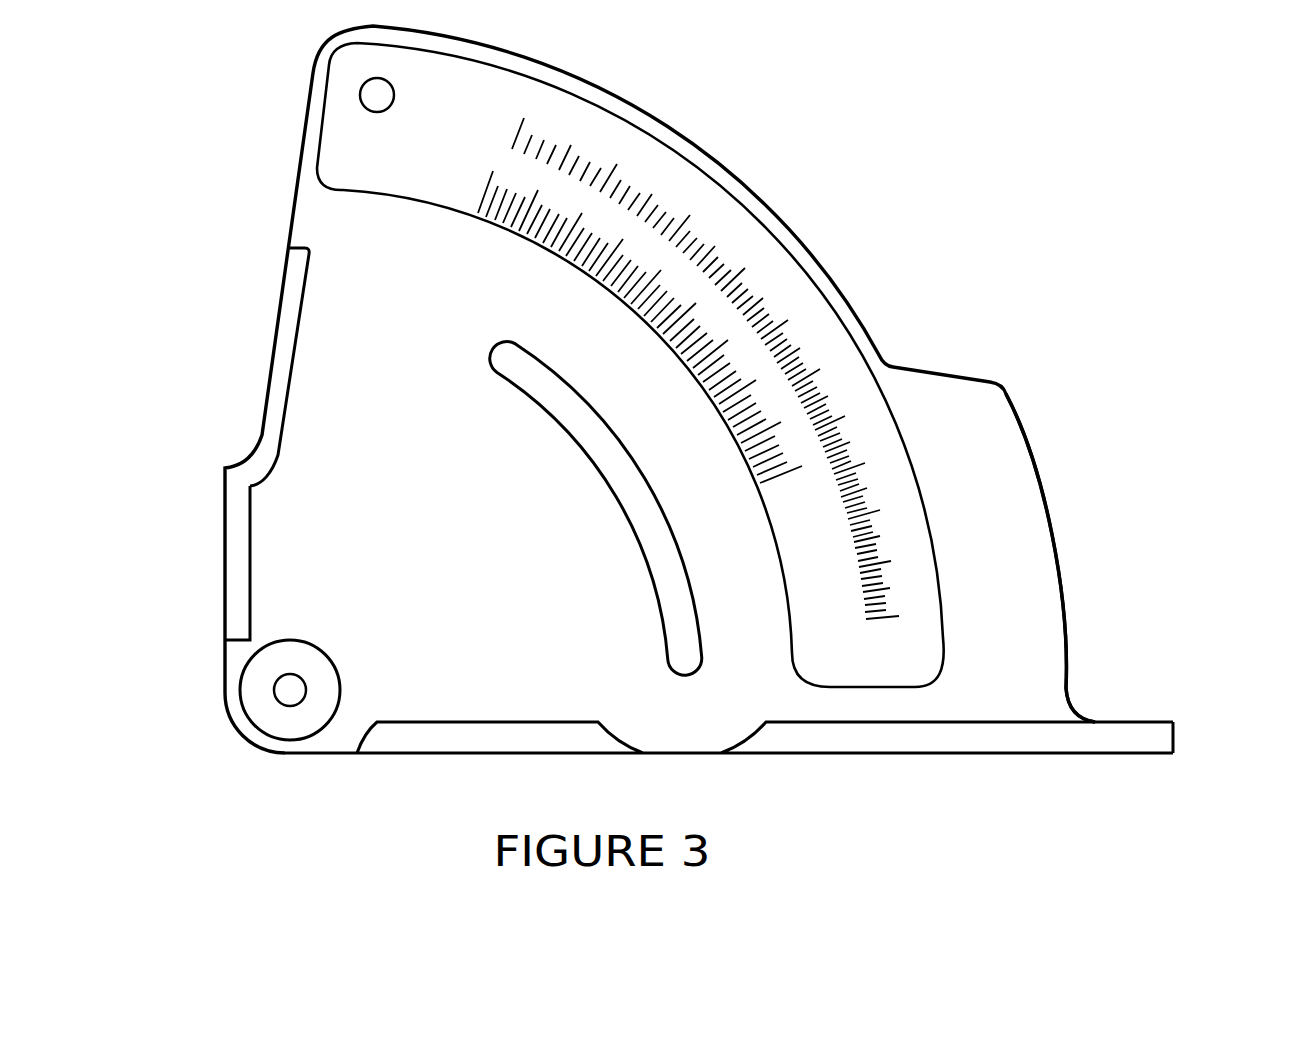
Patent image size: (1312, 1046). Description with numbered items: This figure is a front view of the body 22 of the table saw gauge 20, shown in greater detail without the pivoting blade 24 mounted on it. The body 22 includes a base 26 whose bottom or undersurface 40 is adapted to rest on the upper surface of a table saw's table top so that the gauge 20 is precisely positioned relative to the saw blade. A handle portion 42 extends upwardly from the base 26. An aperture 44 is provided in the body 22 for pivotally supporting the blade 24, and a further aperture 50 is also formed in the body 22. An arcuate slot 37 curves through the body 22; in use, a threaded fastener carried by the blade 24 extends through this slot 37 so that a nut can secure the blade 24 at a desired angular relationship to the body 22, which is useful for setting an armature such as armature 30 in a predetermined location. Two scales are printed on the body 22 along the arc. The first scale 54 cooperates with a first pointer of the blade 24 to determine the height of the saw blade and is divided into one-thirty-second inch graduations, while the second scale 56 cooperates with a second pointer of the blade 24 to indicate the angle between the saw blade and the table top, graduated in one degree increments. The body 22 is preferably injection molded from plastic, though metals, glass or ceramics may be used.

The table saw gauge 20 is at (668, 97).
The body 22 is at (712, 149).
The blade 24 is at (252, 390).
The base 26 is at (1124, 741).
The armature 30 is at (210, 577).
The arcuate slot 37 is at (547, 372).
The bottom or undersurface 40 is at (884, 757).
The handle portion 42 is at (960, 428).
The aperture 44 is at (285, 705).
The aperture 50 is at (381, 82).
The first scale 54 is at (770, 283).
The second scale 56 is at (657, 268).